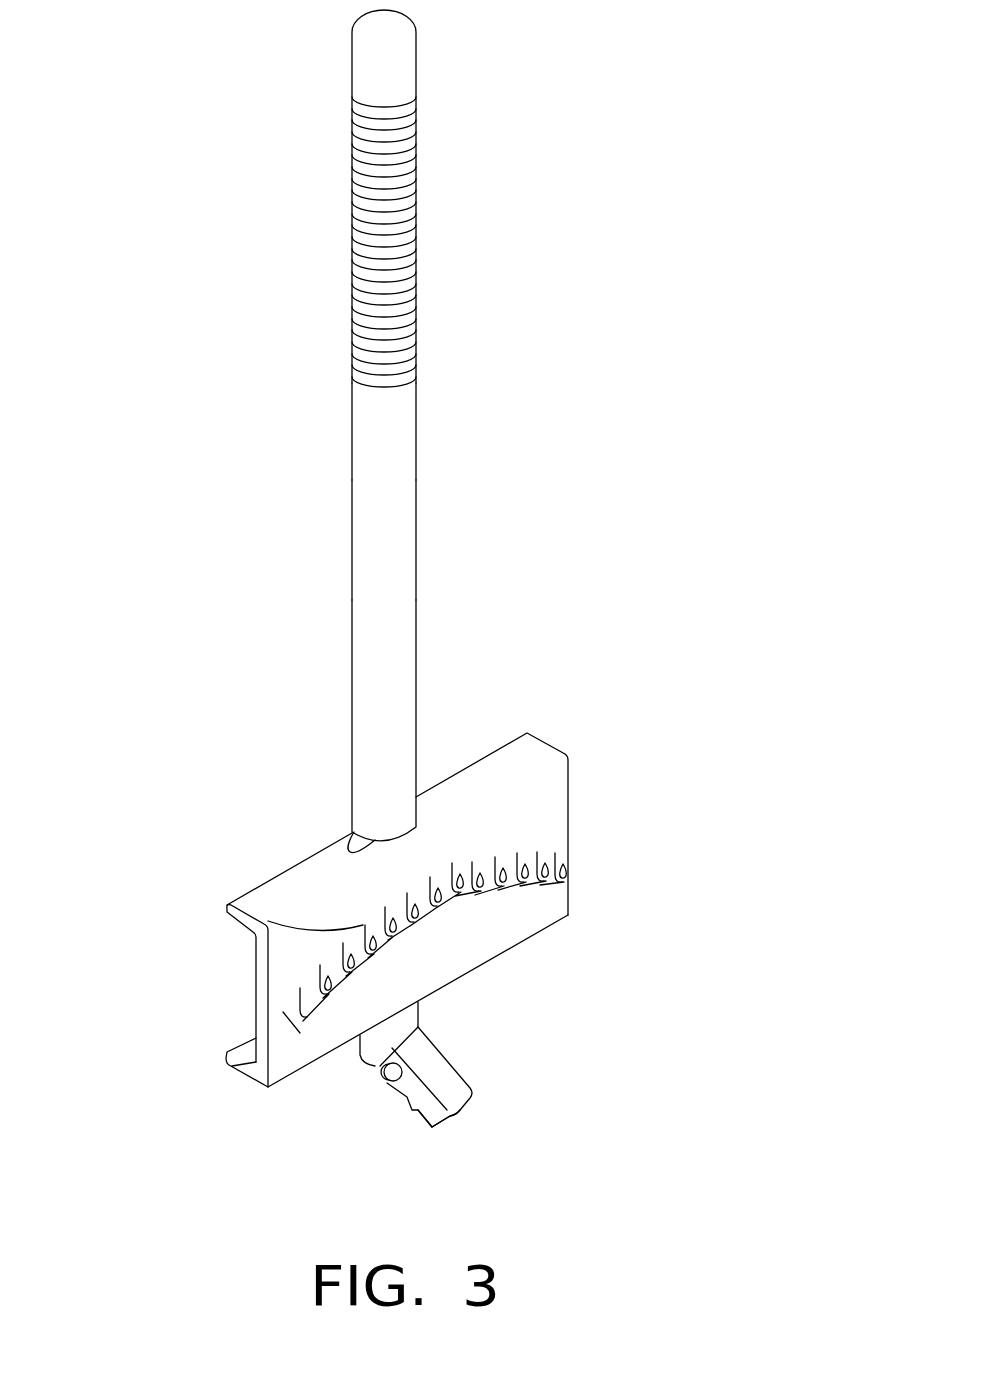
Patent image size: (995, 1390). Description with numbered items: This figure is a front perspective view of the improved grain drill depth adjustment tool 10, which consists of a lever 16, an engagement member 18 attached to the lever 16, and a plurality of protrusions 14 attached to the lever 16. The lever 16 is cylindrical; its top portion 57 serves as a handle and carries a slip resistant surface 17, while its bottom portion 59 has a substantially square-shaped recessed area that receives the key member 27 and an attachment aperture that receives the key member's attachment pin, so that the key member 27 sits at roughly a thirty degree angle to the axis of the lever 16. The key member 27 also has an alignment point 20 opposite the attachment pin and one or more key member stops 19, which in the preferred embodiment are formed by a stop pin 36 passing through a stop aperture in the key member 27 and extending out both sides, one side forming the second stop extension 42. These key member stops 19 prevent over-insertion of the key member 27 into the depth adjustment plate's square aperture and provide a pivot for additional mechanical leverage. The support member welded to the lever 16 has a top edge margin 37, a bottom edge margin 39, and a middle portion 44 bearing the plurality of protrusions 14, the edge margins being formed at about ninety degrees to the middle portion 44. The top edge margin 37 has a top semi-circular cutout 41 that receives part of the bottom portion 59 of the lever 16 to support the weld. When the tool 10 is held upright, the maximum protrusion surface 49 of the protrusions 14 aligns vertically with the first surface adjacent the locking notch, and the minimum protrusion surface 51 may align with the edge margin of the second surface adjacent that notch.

The improved grain drill depth adjustment tool 10 is at (293, 470).
The plurality of protrusions 14 is at (478, 918).
The lever 16 is at (387, 547).
The slip resistant surface 17 is at (416, 248).
The engagement member 18 is at (443, 1145).
The key member stops 19 is at (388, 1087).
The alignment point 20 is at (457, 1113).
The key member 27 is at (450, 1080).
The stop pin 36 is at (383, 1070).
The top edge margin 37 is at (300, 887).
The bottom edge margin 39 is at (243, 1078).
The top semi-circular cutout 41 is at (328, 847).
The second stop extension 42 is at (387, 1087).
The middle portion 44 is at (542, 822).
The maximum protrusion surface 49 is at (400, 945).
The minimum protrusion surface 51 is at (228, 902).
The top portion 57 is at (397, 418).
The bottom portion 59 is at (388, 692).